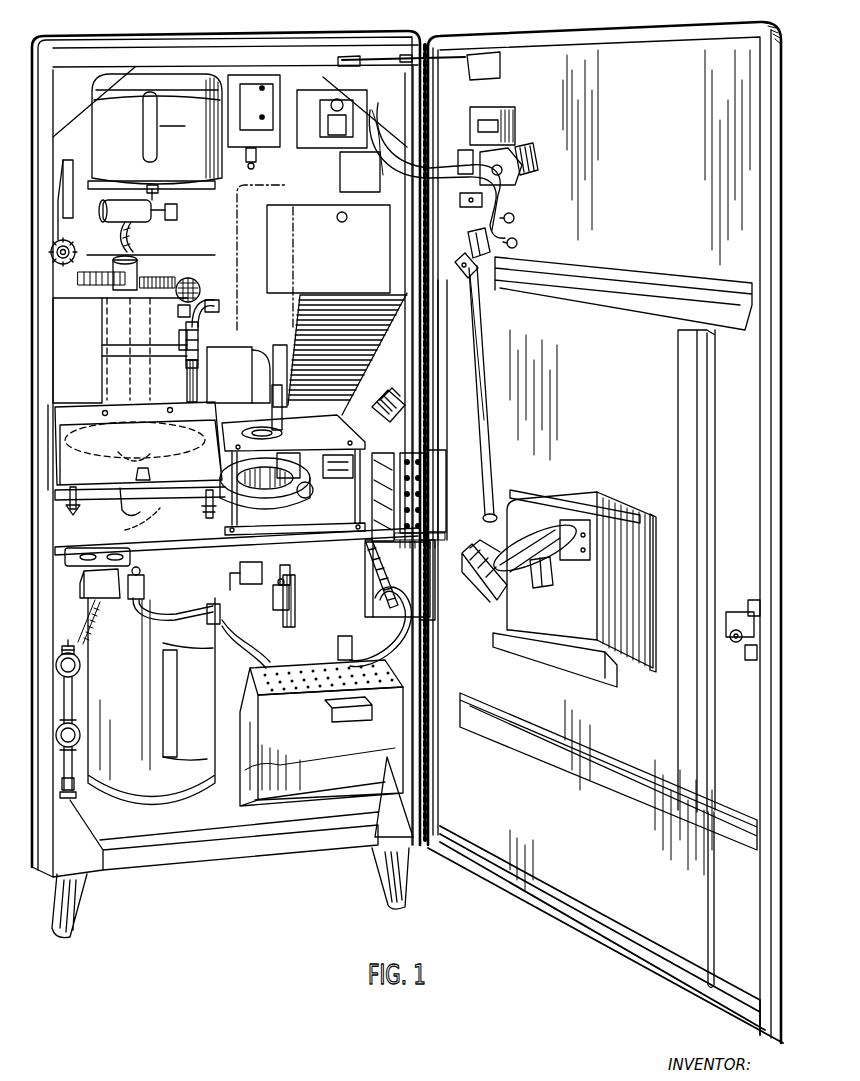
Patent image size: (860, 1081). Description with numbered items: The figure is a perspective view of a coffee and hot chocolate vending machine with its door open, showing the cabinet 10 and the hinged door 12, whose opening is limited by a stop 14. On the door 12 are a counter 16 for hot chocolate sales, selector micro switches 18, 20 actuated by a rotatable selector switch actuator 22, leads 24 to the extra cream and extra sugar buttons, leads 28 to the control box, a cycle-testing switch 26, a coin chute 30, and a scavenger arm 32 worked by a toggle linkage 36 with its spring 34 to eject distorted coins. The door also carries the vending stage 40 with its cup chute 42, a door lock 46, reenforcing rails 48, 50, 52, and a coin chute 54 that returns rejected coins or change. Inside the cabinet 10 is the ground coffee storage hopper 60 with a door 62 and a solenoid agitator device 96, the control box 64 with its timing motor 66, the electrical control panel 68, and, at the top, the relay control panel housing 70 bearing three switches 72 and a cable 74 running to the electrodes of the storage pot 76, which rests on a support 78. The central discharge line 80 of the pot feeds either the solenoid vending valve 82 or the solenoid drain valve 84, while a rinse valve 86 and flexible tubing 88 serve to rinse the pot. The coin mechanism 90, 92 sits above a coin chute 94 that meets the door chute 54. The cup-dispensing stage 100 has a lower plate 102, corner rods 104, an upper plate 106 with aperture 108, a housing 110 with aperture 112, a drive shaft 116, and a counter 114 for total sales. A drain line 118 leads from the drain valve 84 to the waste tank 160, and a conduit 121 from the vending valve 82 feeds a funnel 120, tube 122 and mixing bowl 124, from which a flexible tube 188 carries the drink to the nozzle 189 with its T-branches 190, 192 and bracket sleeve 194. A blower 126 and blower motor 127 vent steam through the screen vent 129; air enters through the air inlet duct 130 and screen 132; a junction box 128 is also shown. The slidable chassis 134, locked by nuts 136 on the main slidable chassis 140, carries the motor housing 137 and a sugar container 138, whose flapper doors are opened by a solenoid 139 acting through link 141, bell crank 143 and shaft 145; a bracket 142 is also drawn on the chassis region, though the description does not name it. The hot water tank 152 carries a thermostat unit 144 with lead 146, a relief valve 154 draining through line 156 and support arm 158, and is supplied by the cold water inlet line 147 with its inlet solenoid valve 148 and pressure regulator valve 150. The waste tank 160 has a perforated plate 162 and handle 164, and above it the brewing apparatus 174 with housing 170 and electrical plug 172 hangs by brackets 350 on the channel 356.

The cabinet 10 is at (220, 48).
The hinged door 12 is at (567, 52).
The stop 14 is at (378, 58).
The counter 16 is at (513, 123).
The selector micro switch 18 is at (533, 161).
The selector micro switch 20 is at (457, 158).
The selector switch actuator 22 is at (520, 182).
The leads 24 is at (516, 220).
The cycle-testing switch 26 is at (460, 199).
The leads 28 is at (402, 177).
The coin chute 30 is at (470, 240).
The scavenger arm 32 is at (458, 263).
The spring 34 is at (483, 317).
The toggle linkage 36 is at (481, 416).
The vending stage 40 is at (628, 567).
The cup chute 42 is at (553, 568).
The door lock 46 is at (730, 605).
The reenforcing rail 48 is at (692, 500).
The reenforcing rail 50 is at (592, 778).
The reenforcing rail 52 is at (585, 283).
The coin chute 54 is at (480, 583).
The ground coffee storage hopper 60 is at (268, 224).
The door 62 is at (305, 240).
The control box 64 is at (305, 149).
The timing motor 66 is at (338, 138).
The panel 68 is at (346, 182).
The relay control panel housing 70 is at (256, 107).
The switches 72 is at (262, 116).
The cable 74 is at (253, 162).
The storage pot 76 is at (157, 129).
The support 78 is at (205, 183).
The central discharge line 80 is at (158, 190).
The solenoid vending valve 82 is at (178, 221).
The solenoid drain valve 84 is at (113, 223).
The rinse valve 86 is at (67, 244).
The flexible tubing 88 is at (74, 178).
The coin mechanism 90 is at (443, 383).
The coin mechanism 92 is at (424, 478).
The coin chute 94 is at (434, 581).
The solenoid agitator device 96 is at (388, 415).
The cup-dispensing stage 100 is at (300, 505).
The lower plate 102 is at (286, 524).
The corner rods 104 is at (348, 494).
The upper plate 106 is at (336, 438).
The aperture 108 is at (292, 420).
The housing 110 is at (295, 475).
The aperture 112 is at (270, 489).
The counter 114 is at (350, 460).
The drive shaft 116 is at (288, 407).
The drain line 118 is at (268, 296).
The funnel 120 is at (132, 263).
The conduit 121 is at (127, 244).
The tube 122 is at (125, 325).
The mixing bowl 124 is at (138, 443).
The blower 126 is at (218, 294).
The blower motor 127 is at (250, 342).
The junction box 128 is at (236, 383).
The screen vent 129 is at (191, 283).
The air inlet duct 130 is at (185, 343).
The screen 132 is at (172, 278).
The slidable chassis 134 is at (120, 492).
The locking nuts 136 is at (77, 505).
The motor housing 137 is at (75, 456).
The container for sugar 138 is at (86, 371).
The solenoid 139 is at (178, 311).
The main slidable chassis 140 is at (173, 558).
The link 141 is at (208, 313).
The bracket 142 is at (96, 552).
The bell crank 143 is at (204, 330).
The thermostat unit 144 is at (100, 595).
The shaft 145 is at (187, 365).
The thermostat lead 146 is at (86, 626).
The cold water inlet line 147 is at (74, 792).
The inlet solenoid valve 148 is at (80, 661).
The pressure regulator valve 150 is at (80, 733).
The hot water tank 152 is at (141, 677).
The pressure and temperature relief valve 154 is at (144, 589).
The drain line 156 is at (160, 621).
The support arm 158 is at (219, 616).
The waste tank 160 is at (326, 753).
The perforated plate 162 is at (283, 695).
The handle 164 is at (357, 716).
The housing 170 is at (357, 616).
The electrical plug 172 is at (345, 660).
The brewing apparatus 174 is at (290, 628).
The flexible tube 188 is at (150, 522).
The nozzle 189 is at (255, 634).
The T-branch 190 is at (254, 561).
The T-branch 192 is at (275, 604).
The bracket sleeve 194 is at (285, 564).
The brackets 350 is at (368, 582).
The channel 356 is at (392, 590).